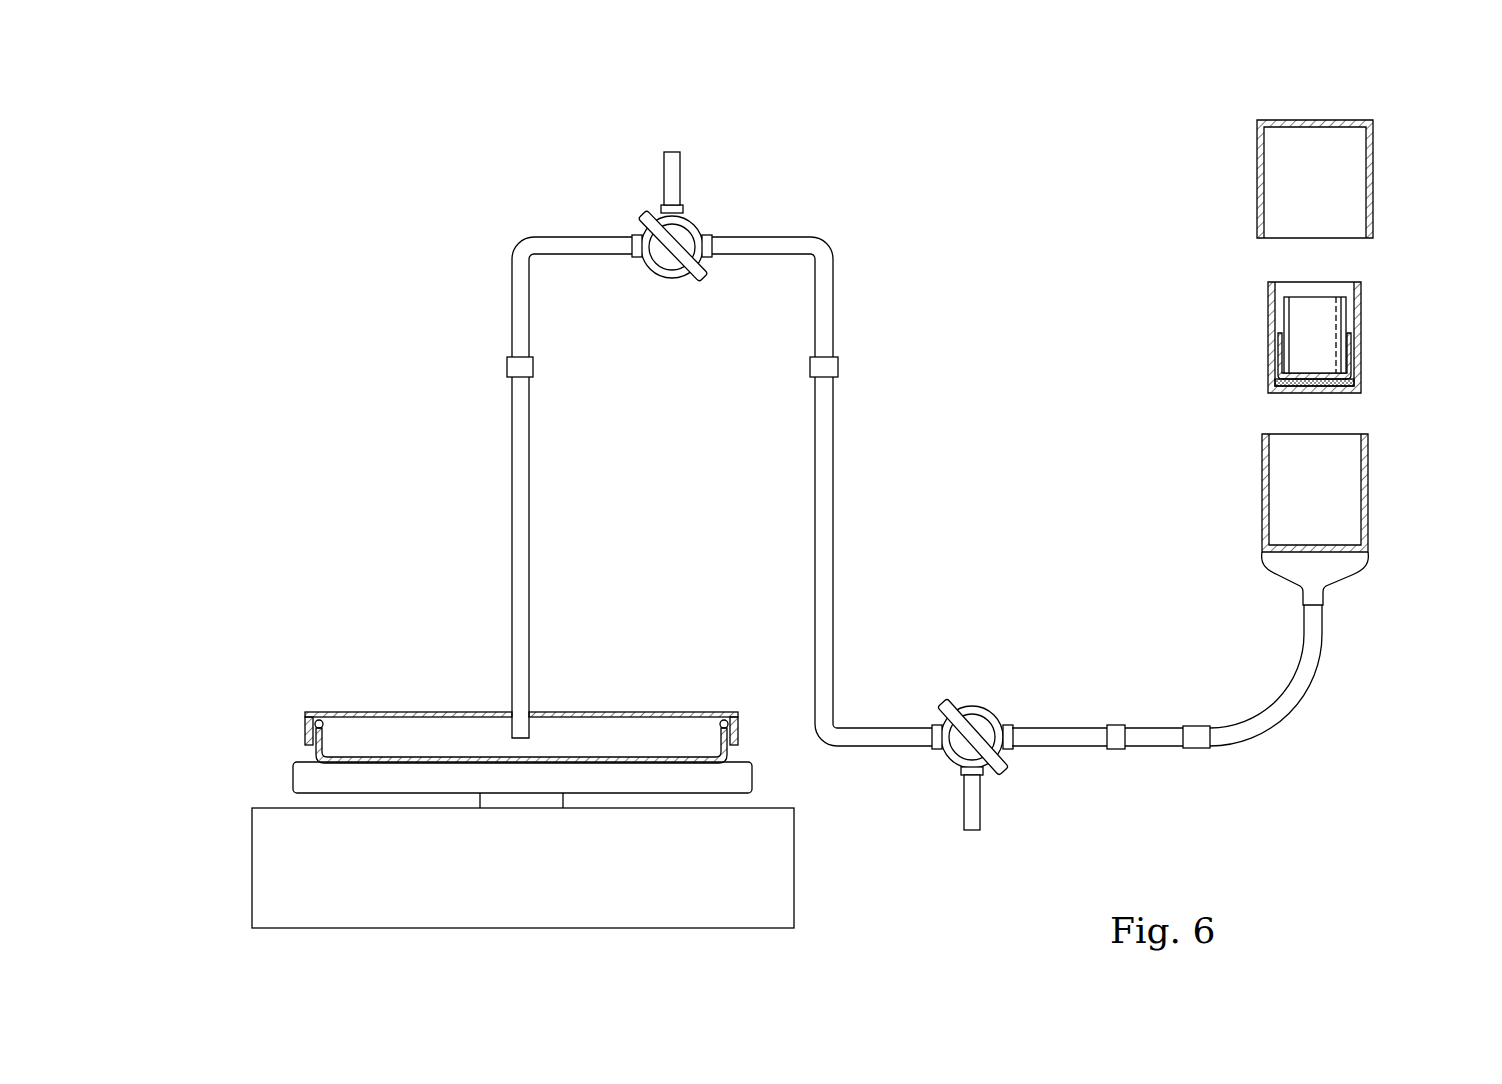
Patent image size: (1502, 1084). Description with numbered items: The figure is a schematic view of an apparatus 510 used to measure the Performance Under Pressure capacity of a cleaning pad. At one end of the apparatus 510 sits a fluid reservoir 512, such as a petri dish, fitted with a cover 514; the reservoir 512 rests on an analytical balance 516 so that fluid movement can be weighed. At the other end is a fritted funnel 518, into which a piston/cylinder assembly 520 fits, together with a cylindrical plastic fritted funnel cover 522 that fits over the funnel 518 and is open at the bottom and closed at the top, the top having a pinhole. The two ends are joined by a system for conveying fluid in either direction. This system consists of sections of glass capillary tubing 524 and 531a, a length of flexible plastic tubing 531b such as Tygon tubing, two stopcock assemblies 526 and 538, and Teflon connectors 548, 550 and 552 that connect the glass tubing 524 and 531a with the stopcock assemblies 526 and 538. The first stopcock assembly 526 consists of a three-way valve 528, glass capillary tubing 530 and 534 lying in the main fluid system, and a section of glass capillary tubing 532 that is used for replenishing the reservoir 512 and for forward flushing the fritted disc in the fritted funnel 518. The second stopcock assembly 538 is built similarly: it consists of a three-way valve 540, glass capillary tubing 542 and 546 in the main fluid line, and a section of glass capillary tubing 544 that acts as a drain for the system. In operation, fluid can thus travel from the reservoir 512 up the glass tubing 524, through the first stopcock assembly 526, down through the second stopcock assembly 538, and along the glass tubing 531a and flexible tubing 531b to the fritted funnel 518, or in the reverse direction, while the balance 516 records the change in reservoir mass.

The apparatus 510 is at (1032, 275).
The fluid reservoir 512 is at (313, 755).
The cover 514 is at (629, 712).
The analytical balance 516 is at (803, 862).
The fritted funnel 518 is at (1377, 458).
The piston/cylinder assembly 520 is at (1378, 317).
The cylindrical plastic fritted funnel cover 522 is at (1388, 160).
The glass capillary tubing 524 is at (512, 534).
The stopcock assembly 526 is at (697, 235).
The 3-way valve 528 is at (666, 262).
The glass capillary tubing 530 is at (585, 237).
The glass capillary tubing 531a is at (1148, 748).
The flexible plastic tubing 531b is at (1293, 698).
The glass capillary tubing 532 is at (662, 168).
The glass capillary tubing 534 is at (747, 237).
The stopcock assembly 538 is at (982, 731).
The 3-way valve 540 is at (975, 720).
The glass capillary tubing 542 is at (900, 748).
The glass capillary tubing 544 is at (982, 823).
The glass capillary tubing 546 is at (1068, 747).
The Teflon connector 548 is at (507, 367).
The Teflon connector 550 is at (838, 369).
The Teflon connector 552 is at (1117, 725).